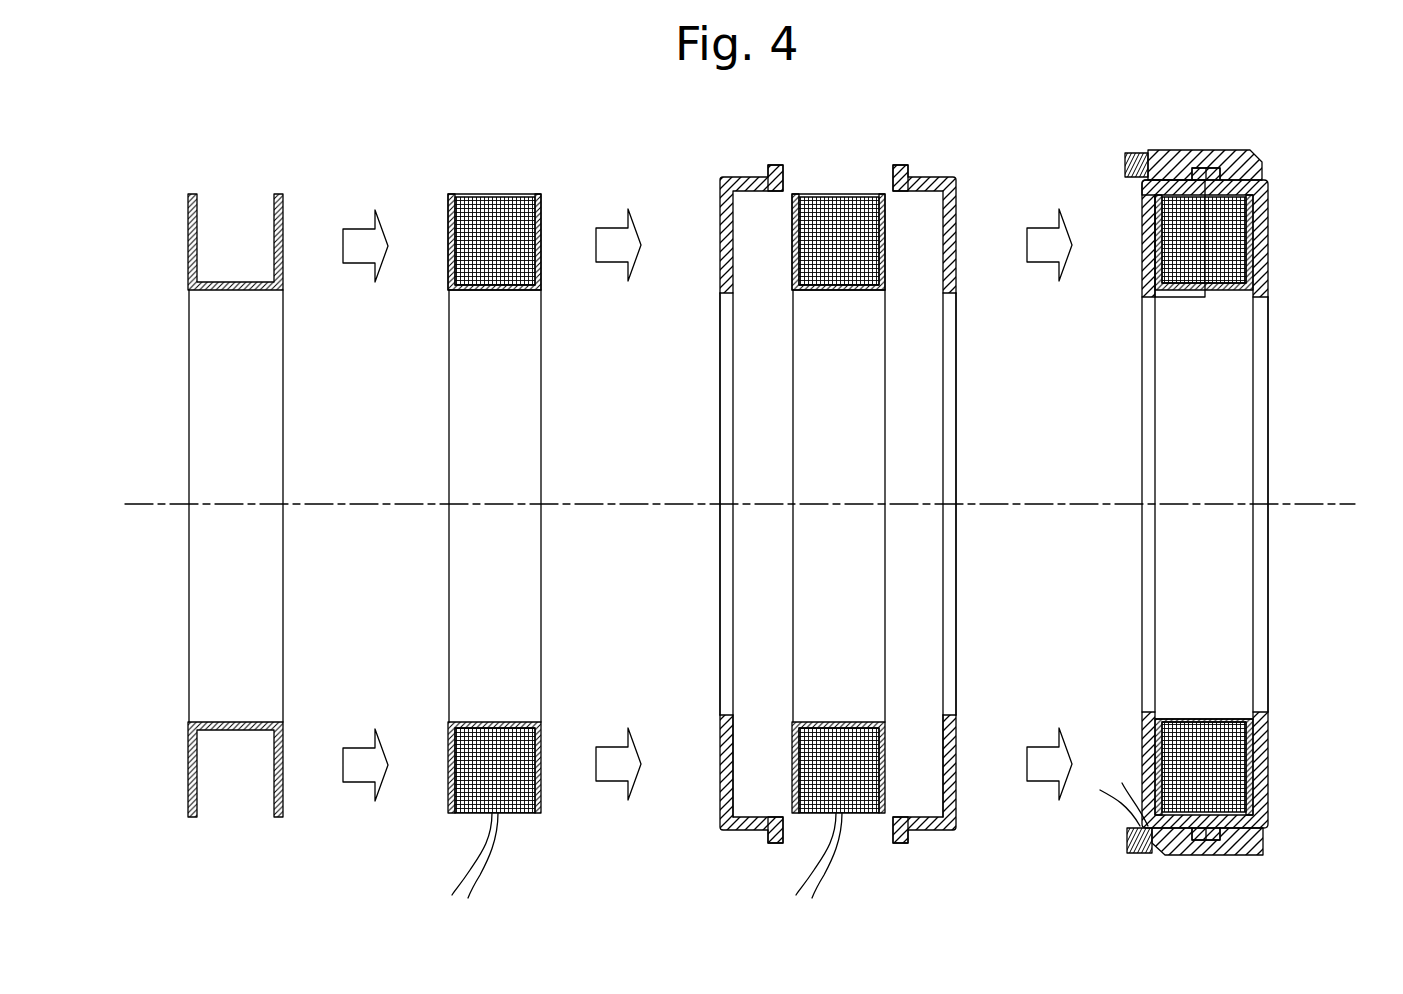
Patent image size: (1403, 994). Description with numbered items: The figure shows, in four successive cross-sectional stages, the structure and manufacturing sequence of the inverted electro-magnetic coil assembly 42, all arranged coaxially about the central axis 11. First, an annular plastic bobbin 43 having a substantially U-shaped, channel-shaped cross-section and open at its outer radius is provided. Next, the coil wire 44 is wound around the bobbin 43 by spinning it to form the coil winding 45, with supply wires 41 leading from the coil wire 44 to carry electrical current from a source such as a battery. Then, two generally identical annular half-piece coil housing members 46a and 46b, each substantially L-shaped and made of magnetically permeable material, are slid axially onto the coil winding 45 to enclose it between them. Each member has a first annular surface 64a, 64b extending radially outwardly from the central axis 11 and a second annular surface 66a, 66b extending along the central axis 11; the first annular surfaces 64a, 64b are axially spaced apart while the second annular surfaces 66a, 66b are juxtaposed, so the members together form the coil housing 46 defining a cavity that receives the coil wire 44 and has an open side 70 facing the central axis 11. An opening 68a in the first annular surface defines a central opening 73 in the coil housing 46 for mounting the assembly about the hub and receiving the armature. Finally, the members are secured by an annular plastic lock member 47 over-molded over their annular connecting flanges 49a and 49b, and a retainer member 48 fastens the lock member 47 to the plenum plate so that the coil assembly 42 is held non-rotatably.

The central axis 11 is at (1355, 503).
The supply wires 41 is at (485, 860).
The inverted electro-magnetic coil assembly 42 is at (1268, 206).
The bobbin 43 is at (188, 268).
The coil wire 44 is at (520, 197).
The coil winding 45 is at (450, 236).
The coil housing 46 is at (1268, 243).
The half-piece coil housing member 46a is at (720, 268).
The half-piece coil housing member 46b is at (956, 265).
The lock member 47 is at (1193, 150).
The retainer member 48 is at (1128, 153).
The annular connecting flange 49a is at (775, 843).
The annular connecting flange 49b is at (905, 843).
The first annular surface 64a is at (733, 755).
The first annular surface 64b is at (943, 755).
The second annular surface 66a is at (757, 191).
The second annular surface 66b is at (918, 191).
The opening 68a is at (733, 603).
The open side 70 is at (1218, 712).
The central opening 73 is at (1268, 602).